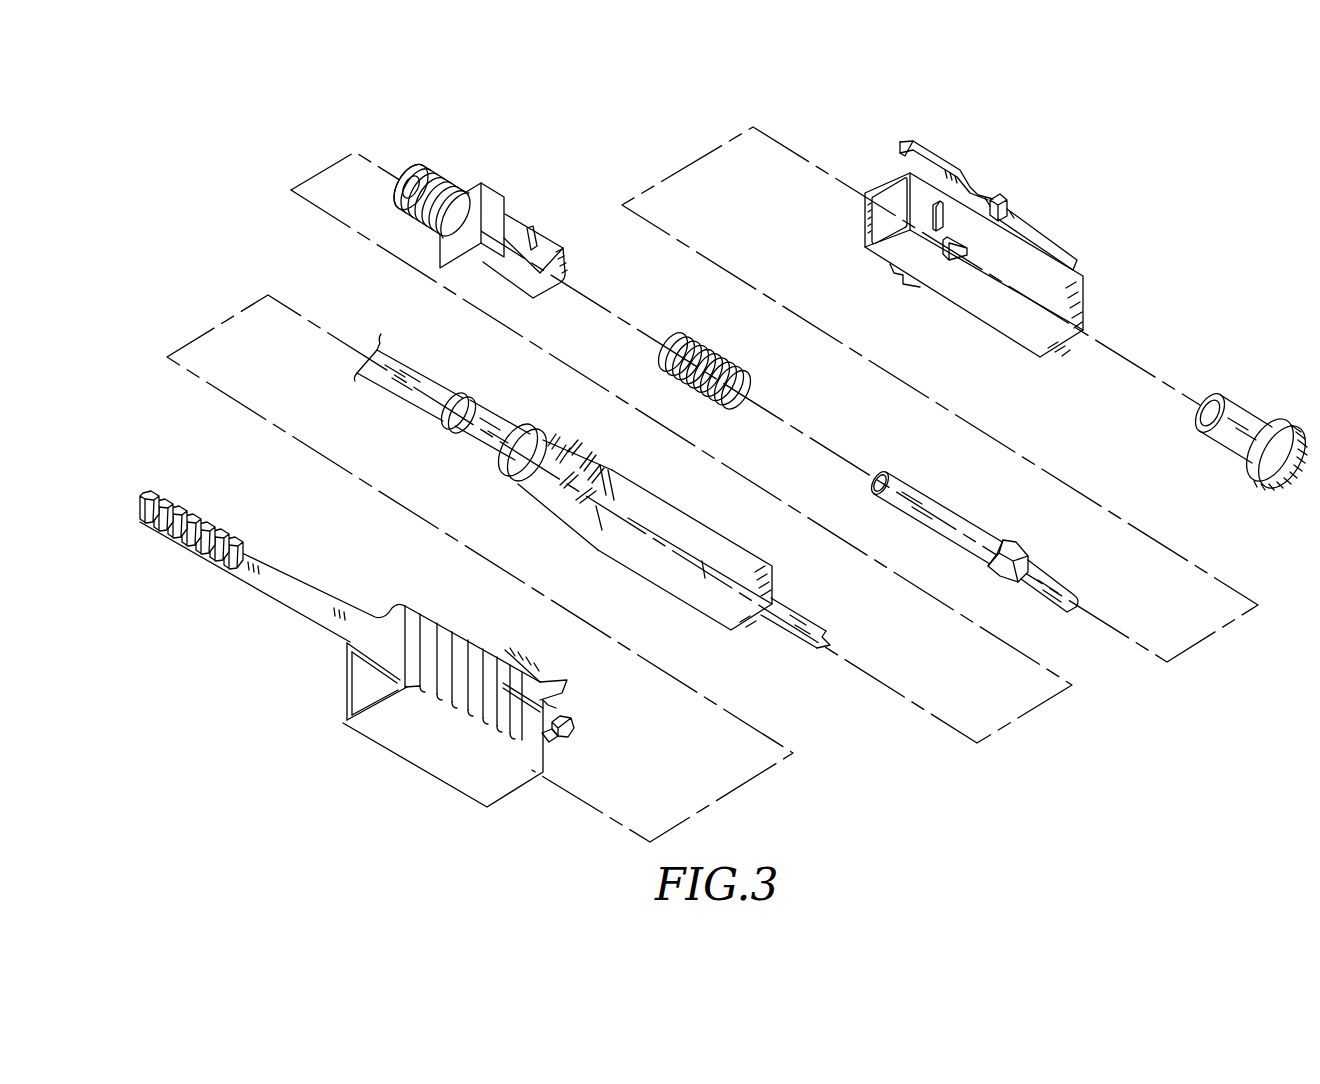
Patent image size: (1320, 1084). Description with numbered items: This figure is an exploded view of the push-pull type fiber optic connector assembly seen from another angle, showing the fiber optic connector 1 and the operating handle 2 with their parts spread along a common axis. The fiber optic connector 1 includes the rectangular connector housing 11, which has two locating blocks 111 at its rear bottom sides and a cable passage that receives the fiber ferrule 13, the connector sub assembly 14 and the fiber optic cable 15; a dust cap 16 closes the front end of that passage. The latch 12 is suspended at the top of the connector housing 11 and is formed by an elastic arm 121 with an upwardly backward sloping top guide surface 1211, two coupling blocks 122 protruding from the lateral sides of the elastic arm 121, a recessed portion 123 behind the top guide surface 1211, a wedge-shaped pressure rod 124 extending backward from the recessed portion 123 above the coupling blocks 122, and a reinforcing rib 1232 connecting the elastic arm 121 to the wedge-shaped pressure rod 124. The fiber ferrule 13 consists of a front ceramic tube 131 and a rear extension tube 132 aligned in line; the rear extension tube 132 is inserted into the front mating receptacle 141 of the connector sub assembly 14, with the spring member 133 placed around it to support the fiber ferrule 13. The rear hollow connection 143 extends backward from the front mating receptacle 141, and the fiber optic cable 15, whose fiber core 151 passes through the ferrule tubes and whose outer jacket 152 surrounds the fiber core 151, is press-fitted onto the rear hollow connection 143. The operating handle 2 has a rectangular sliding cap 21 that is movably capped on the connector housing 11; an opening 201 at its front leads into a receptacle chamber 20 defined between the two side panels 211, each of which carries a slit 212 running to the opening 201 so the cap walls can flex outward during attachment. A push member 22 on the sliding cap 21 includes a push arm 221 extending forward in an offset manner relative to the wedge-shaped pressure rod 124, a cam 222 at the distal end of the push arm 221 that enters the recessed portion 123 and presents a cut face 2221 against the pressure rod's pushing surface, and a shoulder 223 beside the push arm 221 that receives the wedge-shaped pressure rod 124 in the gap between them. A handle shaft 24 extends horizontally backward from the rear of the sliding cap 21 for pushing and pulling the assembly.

The fiber optic connector 1 is at (1016, 252).
The connector housing 11 is at (958, 288).
The locating blocks 111 is at (902, 284).
The latch 12 is at (1021, 238).
The elastic arm 121 is at (1024, 228).
The top guide surface 1211 is at (1014, 214).
The coupling blocks 122 is at (1000, 205).
The recessed portion 123 is at (978, 192).
The reinforcing rib 1232 is at (992, 194).
The wedge-shaped pressure rod 124 is at (910, 148).
The fiber ferrule 13 is at (982, 530).
The front ceramic tube 131 is at (1060, 592).
The rear extension tube 132 is at (957, 520).
The spring member 133 is at (723, 367).
The connector sub assembly 14 is at (519, 212).
The front mating receptacle 141 is at (498, 198).
The rear hollow connection 143 is at (446, 178).
The fiber optic cable 15 is at (592, 506).
The fiber core 151 is at (795, 627).
The outer jacket 152 is at (655, 573).
The dust cap 16 is at (1252, 428).
The operating handle 2 is at (401, 668).
The receptacle chamber 20 is at (370, 669).
The opening 201 is at (350, 704).
The sliding cap 21 is at (454, 725).
The side panels 211 is at (443, 713).
The slits 212 is at (520, 700).
The push member 22 is at (602, 730).
The push arm 221 is at (545, 705).
The cam 222 is at (572, 722).
The cut face 2221 is at (555, 740).
The shoulder 223 is at (553, 678).
The handle shaft 24 is at (263, 570).